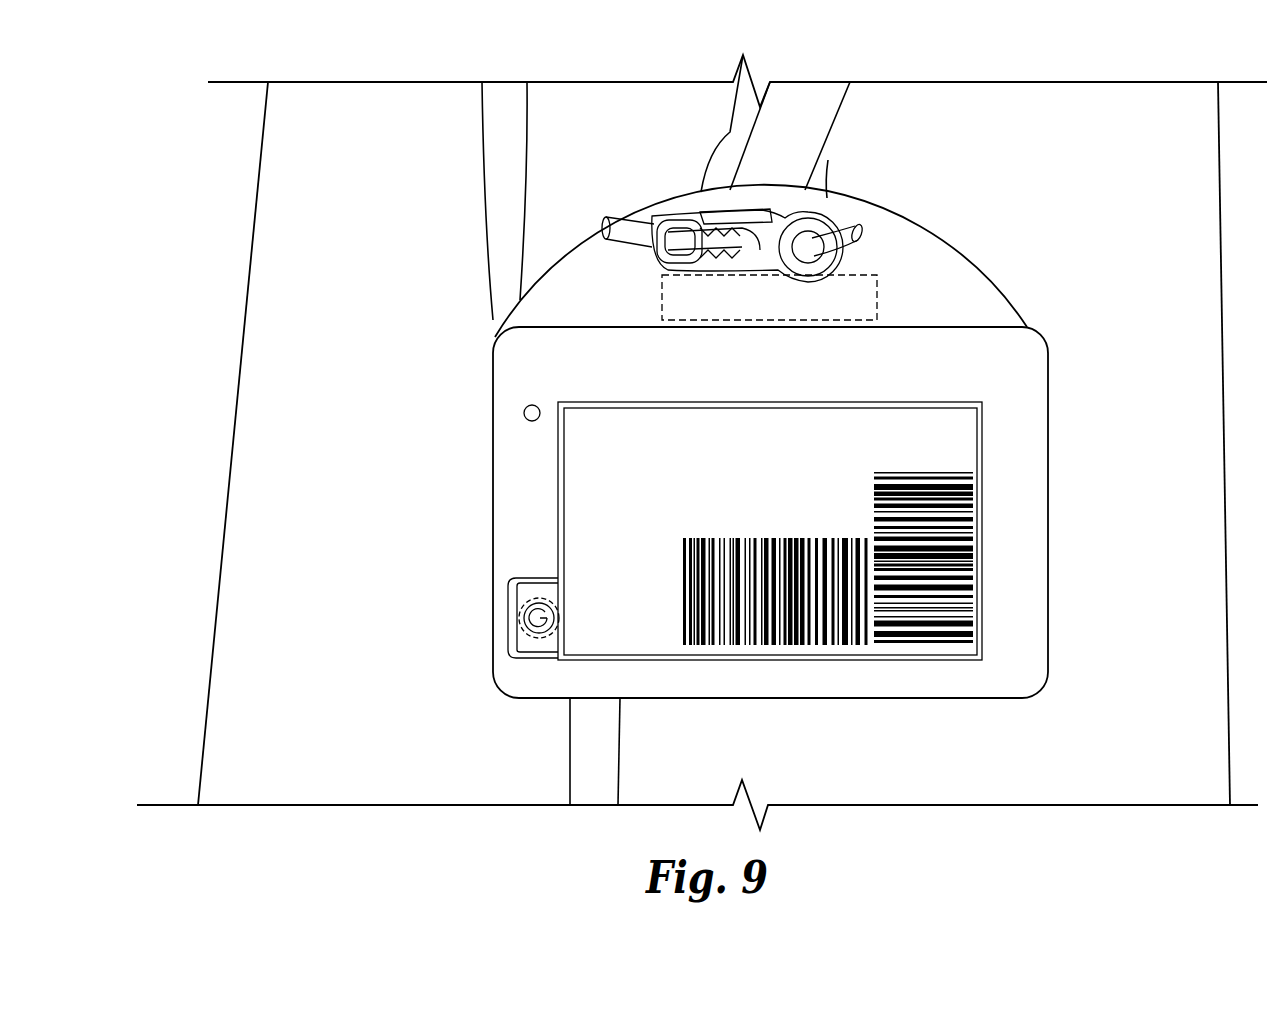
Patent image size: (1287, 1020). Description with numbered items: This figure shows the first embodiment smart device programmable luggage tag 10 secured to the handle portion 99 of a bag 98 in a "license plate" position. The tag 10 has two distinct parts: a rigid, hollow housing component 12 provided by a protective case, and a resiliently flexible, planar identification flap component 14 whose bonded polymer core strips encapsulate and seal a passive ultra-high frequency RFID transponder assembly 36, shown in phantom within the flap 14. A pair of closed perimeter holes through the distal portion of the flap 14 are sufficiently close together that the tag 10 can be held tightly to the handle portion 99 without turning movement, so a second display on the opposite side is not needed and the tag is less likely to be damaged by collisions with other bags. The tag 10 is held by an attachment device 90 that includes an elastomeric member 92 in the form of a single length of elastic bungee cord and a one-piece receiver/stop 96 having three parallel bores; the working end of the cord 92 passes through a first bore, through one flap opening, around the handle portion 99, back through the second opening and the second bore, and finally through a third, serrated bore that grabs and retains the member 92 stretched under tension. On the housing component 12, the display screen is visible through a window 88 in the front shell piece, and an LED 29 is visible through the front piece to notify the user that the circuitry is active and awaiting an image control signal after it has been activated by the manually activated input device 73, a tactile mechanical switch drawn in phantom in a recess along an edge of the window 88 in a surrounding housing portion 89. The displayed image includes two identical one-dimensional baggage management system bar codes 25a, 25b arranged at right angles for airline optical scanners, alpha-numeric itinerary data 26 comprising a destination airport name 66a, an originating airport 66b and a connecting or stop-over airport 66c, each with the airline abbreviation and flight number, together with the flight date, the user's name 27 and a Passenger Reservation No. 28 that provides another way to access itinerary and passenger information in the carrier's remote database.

The smart device programmable luggage tag 10 is at (749, 438).
The rigid hollow housing component 12 is at (1049, 322).
The planar identification flap component 14 is at (905, 194).
The baggage management system bar code 25a is at (810, 646).
The baggage management system bar code 25b is at (975, 627).
The alpha-numeric itinerary data 26 is at (591, 524).
The user's name 27 is at (932, 414).
The Passenger Reservation No. 28 is at (958, 441).
The LED 29 is at (524, 412).
The RFID transponder assembly 36 is at (868, 305).
The destination airport name 66a is at (573, 465).
The originating airport 66b is at (572, 583).
The connecting or stop-over airport 66c is at (572, 620).
The manually activated input device 73 is at (531, 640).
The window 88 is at (745, 548).
The button housing 89 is at (513, 588).
The attachment device 90 is at (764, 211).
The elastomeric member 92 is at (866, 233).
The receiver/stop 96 is at (797, 208).
The bag 98 is at (396, 253).
The handle portion 99 is at (812, 117).